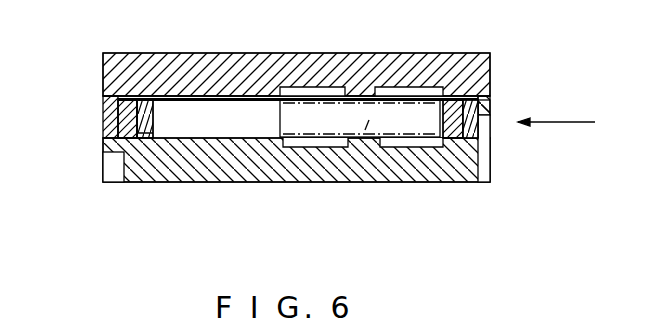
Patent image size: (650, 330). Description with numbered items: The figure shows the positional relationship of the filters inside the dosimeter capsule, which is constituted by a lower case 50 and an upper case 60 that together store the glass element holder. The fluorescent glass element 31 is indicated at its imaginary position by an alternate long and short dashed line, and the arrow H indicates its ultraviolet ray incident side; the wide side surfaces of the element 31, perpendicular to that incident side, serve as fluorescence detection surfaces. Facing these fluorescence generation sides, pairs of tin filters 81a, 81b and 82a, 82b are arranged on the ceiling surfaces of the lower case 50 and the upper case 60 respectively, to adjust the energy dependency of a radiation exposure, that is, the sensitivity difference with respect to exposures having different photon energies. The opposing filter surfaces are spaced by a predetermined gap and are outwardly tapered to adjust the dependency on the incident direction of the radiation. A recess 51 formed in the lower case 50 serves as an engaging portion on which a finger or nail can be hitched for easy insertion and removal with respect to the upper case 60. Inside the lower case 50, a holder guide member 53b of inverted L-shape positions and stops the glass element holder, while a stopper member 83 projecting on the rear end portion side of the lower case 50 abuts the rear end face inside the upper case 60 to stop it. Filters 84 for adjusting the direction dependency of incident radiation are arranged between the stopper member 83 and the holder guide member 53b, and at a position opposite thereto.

The upper case 60 is at (158, 53).
The lower case 50 is at (222, 183).
The recess 51 is at (484, 152).
The holder guide member 53b is at (153, 117).
The fluorescent glass element 31 is at (362, 184).
The tin filter 81a is at (295, 184).
The tin filter 81b is at (420, 184).
The tin filter 82a is at (337, 86).
The tin filter 82b is at (410, 86).
The stopper member 83 is at (118, 110).
The filter for adjusting direction dependency 84 is at (140, 133).
The ultraviolet ray incident side H is at (558, 122).